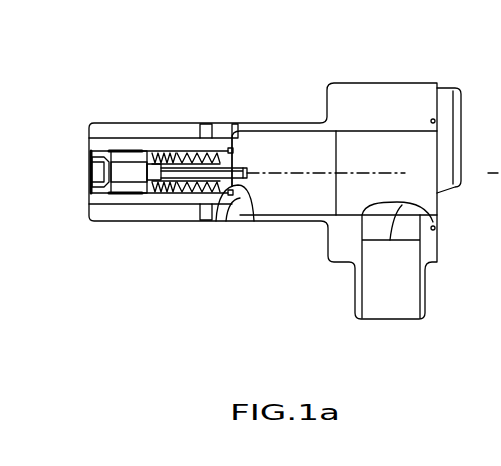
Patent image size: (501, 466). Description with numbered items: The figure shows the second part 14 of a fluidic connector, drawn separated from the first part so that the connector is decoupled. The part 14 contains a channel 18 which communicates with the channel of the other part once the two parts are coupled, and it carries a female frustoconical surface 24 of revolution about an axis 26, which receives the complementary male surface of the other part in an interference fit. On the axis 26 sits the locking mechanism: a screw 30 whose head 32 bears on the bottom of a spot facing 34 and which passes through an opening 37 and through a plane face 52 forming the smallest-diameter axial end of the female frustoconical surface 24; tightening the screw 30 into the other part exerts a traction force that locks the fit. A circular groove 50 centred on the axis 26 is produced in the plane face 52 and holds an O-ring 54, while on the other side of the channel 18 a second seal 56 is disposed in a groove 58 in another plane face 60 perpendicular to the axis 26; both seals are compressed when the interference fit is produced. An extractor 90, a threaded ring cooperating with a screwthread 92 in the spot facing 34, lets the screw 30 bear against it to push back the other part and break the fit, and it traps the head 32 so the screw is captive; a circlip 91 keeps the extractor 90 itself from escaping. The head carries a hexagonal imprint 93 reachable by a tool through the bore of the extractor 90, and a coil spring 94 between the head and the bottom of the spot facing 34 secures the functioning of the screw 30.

The second part 14 is at (290, 76).
The channel 18 is at (378, 289).
The female frustoconical surface 24 is at (284, 133).
The axis 26 is at (366, 172).
The screw 30 is at (252, 135).
The head 32 is at (167, 163).
The spot facing 34 is at (197, 157).
The opening 37 is at (228, 160).
The circular groove 50 is at (220, 196).
The plane face 52 is at (258, 190).
The O-ring 54 is at (240, 185).
The second seal 56 is at (435, 228).
The groove 58 is at (431, 121).
The plane face 60 is at (432, 258).
The extractor 90 is at (114, 188).
The circlip 91 is at (87, 213).
The screwthread 92 is at (128, 148).
The imprint 93 is at (147, 183).
The coil spring 94 is at (100, 160).